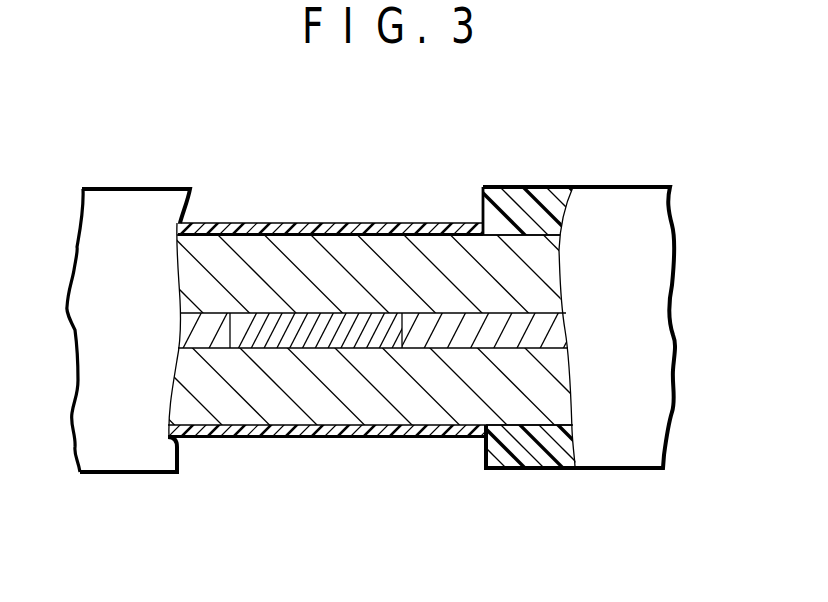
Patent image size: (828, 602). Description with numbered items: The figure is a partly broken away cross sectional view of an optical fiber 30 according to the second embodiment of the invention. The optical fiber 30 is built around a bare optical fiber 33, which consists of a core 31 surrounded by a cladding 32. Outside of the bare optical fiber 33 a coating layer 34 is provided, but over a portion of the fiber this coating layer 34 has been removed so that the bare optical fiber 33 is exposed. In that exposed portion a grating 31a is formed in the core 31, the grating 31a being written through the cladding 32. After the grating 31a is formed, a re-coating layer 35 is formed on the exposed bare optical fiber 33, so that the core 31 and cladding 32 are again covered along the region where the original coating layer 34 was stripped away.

The optical fiber 30 is at (414, 314).
The core 31 is at (382, 415).
The grating 31a is at (298, 345).
The cladding 32 is at (462, 405).
The bare optical fiber 33 is at (414, 373).
The coating layer 34 is at (527, 197).
The re-coating layer 35 is at (299, 231).